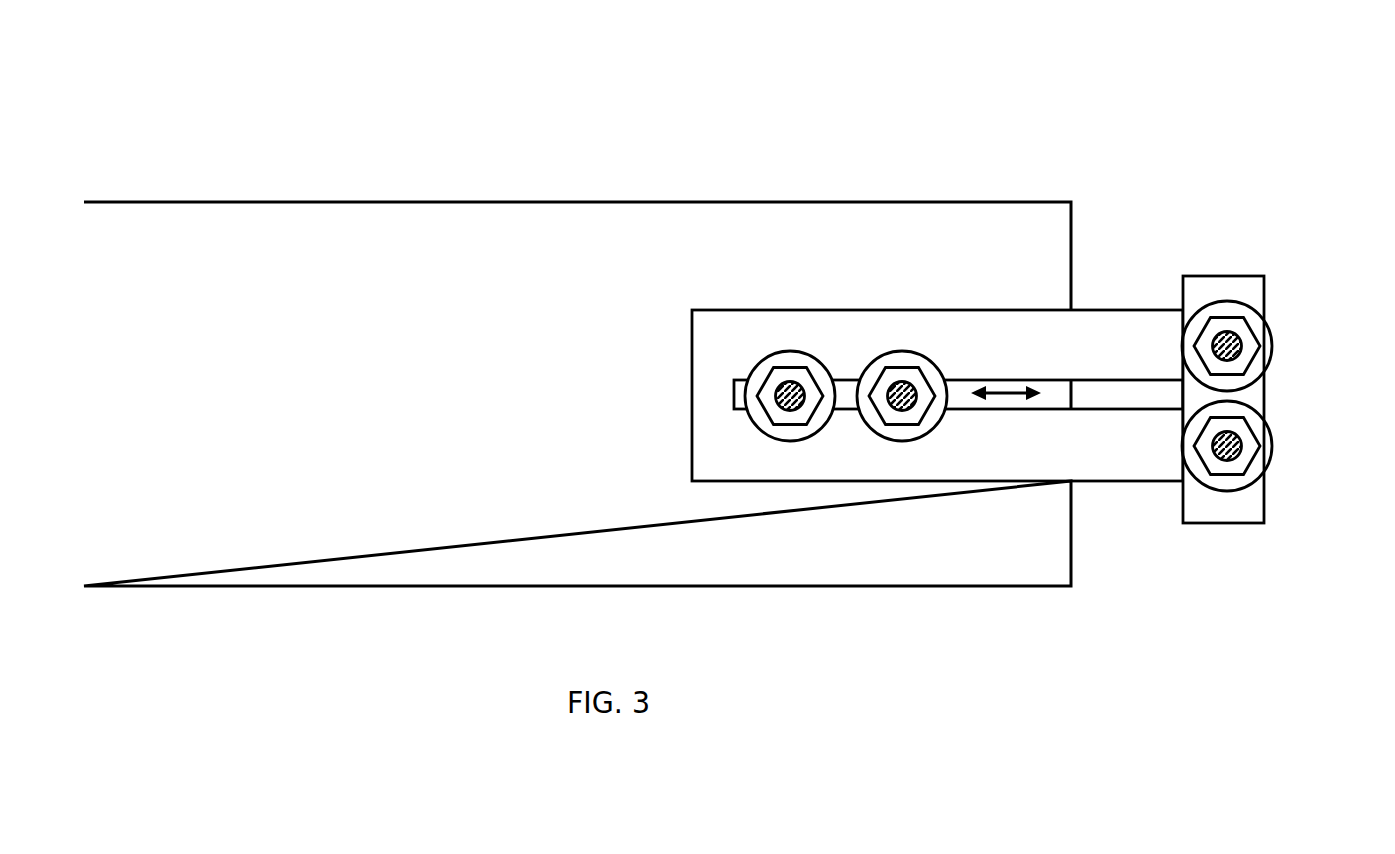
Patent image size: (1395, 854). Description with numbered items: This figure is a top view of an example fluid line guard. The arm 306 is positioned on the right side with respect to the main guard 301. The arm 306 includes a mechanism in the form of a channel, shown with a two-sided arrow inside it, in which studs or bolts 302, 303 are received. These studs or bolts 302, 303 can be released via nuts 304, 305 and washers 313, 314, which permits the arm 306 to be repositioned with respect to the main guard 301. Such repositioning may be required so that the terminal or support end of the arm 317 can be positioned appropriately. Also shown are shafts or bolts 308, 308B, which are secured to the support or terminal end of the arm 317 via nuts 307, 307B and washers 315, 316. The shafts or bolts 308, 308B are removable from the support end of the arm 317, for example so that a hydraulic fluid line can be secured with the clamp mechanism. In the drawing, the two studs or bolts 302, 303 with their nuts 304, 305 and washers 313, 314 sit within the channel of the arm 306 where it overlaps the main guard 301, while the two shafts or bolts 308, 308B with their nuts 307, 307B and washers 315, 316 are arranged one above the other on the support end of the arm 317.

The main guard 301 is at (307, 202).
The stud or bolt 302 is at (803, 392).
The stud or bolt 303 is at (912, 388).
The nut 304 is at (800, 367).
The nut 305 is at (928, 407).
The arm 306 is at (763, 312).
The nut 307 is at (1200, 332).
The nut 307B is at (1200, 458).
The shaft or bolt 308 is at (1245, 330).
The shaft or bolt 308B is at (1240, 455).
The washer 313 is at (803, 442).
The washer 314 is at (912, 442).
The washer 315 is at (1272, 340).
The washer 316 is at (1270, 442).
The support or terminal end of the arm 317 is at (1227, 276).